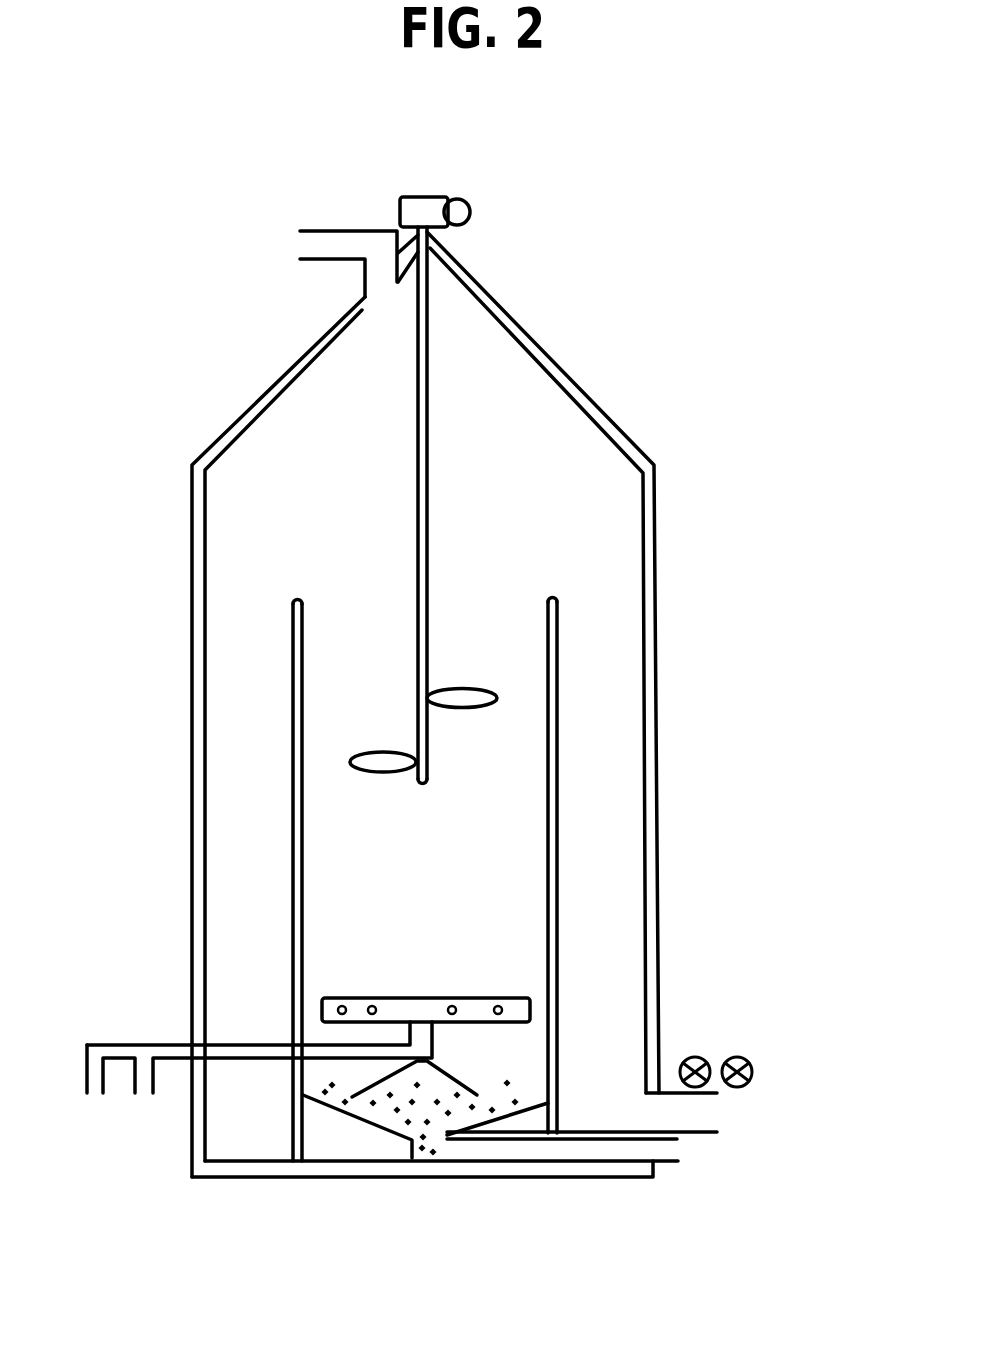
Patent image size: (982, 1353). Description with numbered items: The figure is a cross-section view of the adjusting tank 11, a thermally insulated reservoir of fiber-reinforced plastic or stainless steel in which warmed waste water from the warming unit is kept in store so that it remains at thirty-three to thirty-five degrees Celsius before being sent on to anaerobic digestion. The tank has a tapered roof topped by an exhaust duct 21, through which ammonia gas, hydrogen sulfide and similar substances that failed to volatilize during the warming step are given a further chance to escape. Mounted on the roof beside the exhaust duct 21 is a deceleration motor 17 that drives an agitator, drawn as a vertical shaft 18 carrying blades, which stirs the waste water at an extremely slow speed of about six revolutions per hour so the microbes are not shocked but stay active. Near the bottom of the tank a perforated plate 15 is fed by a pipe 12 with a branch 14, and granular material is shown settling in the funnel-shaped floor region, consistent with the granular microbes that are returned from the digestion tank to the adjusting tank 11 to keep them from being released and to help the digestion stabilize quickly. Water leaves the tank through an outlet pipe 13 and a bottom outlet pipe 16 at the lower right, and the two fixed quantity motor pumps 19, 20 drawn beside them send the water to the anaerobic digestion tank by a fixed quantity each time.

The adjusting tank 11 is at (192, 737).
The carrier gas supply pipe 12 is at (259, 1088).
The gas outlet pipe 13 is at (705, 1113).
The source gas supply pipe 14 is at (102, 1099).
The gas distribution plate 15 is at (473, 1105).
The bottom outlet pipe 16 is at (673, 1148).
The deceleration motor 17 is at (482, 207).
The stirring shaft with blades 18 is at (427, 472).
The fixed quantity motor pump 19 is at (691, 1046).
The fixed quantity motor pump 20 is at (749, 1046).
The exhaust duct 21 is at (317, 259).